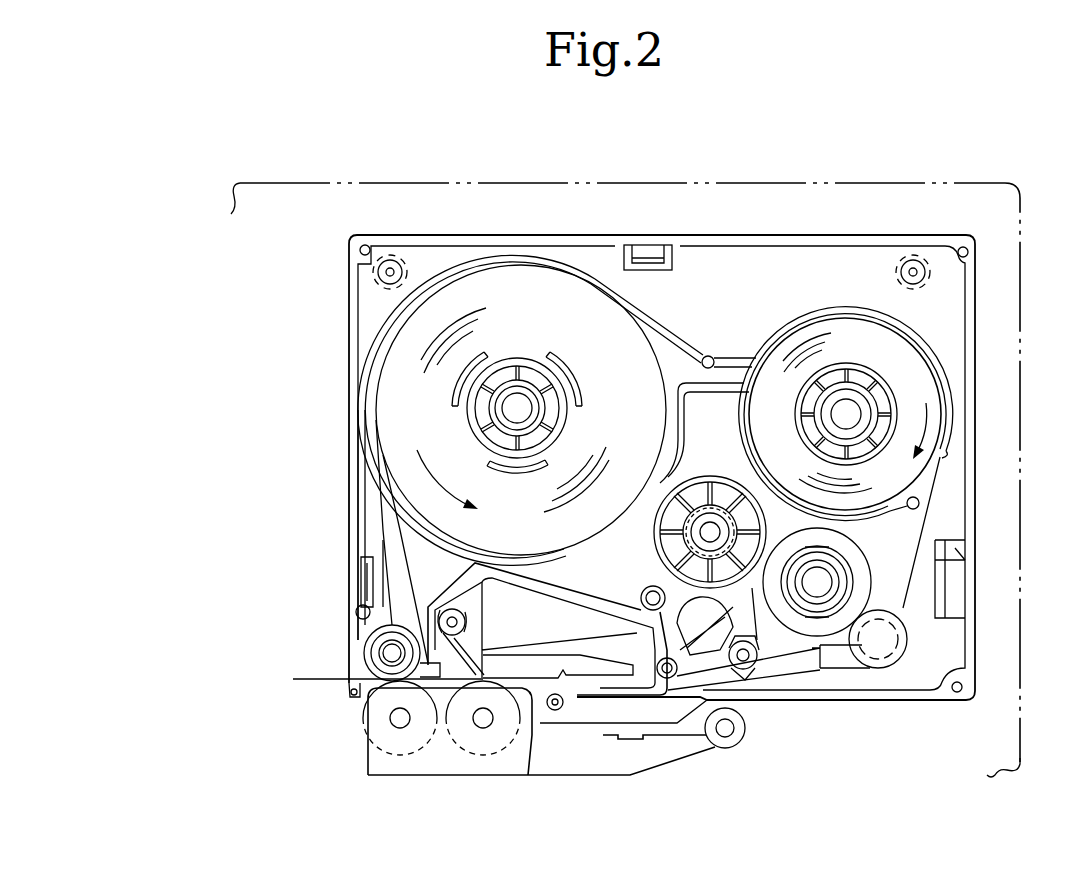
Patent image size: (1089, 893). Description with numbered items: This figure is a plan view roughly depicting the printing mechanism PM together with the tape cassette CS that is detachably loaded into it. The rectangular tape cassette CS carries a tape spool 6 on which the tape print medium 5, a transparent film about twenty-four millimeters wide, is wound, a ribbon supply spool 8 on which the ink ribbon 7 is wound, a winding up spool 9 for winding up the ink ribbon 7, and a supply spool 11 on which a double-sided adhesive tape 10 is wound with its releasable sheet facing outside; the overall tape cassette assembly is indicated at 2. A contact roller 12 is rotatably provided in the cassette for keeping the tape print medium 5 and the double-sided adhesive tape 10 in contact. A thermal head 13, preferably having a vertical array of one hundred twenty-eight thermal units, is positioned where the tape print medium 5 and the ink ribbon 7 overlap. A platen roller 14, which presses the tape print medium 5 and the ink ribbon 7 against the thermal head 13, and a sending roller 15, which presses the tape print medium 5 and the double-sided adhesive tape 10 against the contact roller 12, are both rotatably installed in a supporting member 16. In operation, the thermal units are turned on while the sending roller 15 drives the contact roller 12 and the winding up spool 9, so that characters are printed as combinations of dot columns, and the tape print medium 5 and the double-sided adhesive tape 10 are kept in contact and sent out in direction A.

The tape cassette 2 is at (1036, 280).
The tape cassette CS is at (982, 462).
The tape print medium 5 is at (858, 330).
The tape spool 6 is at (887, 378).
The ink ribbon 7 is at (858, 565).
The ribbon supply spool 8 is at (910, 607).
The winding up spool 9 is at (728, 479).
The double-sided adhesive tape 10 is at (497, 280).
The supply spool 11 is at (533, 366).
The contact roller 12 is at (373, 643).
The thermal head 13 is at (520, 683).
The platen roller 14 is at (463, 751).
The sending roller 15 is at (388, 752).
The supporting member 16 is at (623, 770).
The sending direction A is at (236, 657).
The printing mechanism PM is at (258, 745).